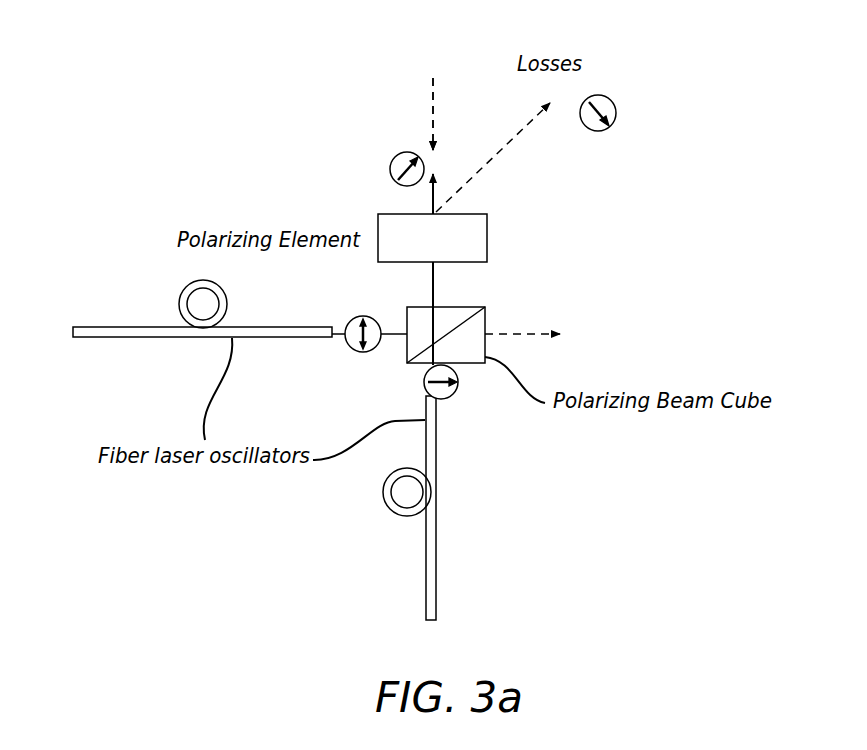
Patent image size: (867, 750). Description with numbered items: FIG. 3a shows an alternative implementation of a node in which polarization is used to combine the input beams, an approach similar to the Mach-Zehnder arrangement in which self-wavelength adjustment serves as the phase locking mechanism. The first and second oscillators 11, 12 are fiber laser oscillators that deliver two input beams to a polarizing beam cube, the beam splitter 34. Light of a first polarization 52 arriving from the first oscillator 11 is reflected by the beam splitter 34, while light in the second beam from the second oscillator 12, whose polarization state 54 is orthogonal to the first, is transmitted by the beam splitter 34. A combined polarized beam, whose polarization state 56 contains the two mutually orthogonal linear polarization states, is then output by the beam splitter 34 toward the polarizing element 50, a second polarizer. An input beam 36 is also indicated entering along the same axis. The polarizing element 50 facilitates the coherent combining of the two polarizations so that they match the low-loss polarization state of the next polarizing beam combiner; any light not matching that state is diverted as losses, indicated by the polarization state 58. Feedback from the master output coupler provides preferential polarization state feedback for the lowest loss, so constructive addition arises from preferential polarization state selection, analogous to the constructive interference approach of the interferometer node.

The first oscillator 11 is at (128, 330).
The second oscillator 12 is at (436, 578).
The beam splitter 34 is at (485, 317).
The input beam 36 is at (433, 100).
The polarizing element 50 is at (487, 222).
The first polarization 52 is at (363, 316).
The polarization state of second beam 54 is at (458, 385).
The polarization state of combined beam 56 is at (390, 170).
The polarization state of losses 58 is at (616, 115).